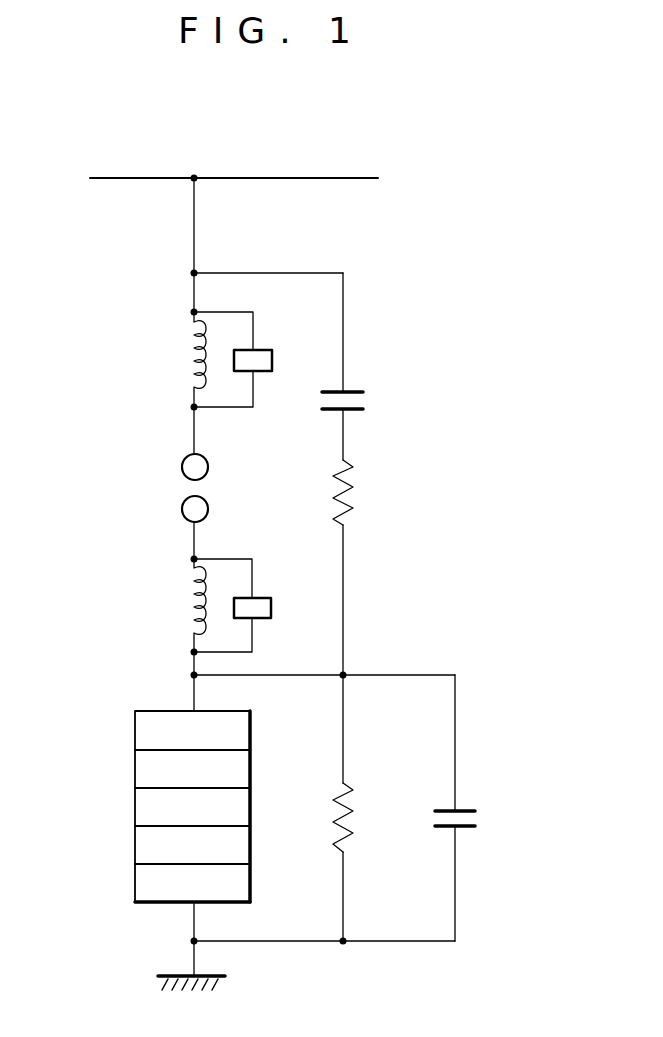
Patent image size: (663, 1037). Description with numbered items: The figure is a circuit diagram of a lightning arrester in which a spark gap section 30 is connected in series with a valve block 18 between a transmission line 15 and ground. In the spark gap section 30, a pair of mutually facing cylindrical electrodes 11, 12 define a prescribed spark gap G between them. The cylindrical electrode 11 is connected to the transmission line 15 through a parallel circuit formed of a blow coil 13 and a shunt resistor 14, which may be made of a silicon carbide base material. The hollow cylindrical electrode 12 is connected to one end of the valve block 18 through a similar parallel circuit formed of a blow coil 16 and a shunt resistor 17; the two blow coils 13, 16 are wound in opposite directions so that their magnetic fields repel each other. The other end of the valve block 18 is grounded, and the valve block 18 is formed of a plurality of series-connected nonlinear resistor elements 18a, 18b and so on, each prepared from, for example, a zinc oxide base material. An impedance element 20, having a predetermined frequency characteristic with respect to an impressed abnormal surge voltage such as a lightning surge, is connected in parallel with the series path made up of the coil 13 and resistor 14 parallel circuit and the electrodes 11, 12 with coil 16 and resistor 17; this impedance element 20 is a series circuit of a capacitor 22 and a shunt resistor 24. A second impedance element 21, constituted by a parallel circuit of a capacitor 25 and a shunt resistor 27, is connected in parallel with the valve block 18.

The transmission line 15 is at (357, 178).
The spark gap section 30 is at (118, 476).
The blow coil 13 is at (180, 357).
The shunt resistor 14 is at (271, 353).
The cylindrical electrode 11 is at (185, 466).
The spark gap G is at (197, 487).
The cylindrical electrode 12 is at (185, 511).
The blow coil 16 is at (187, 610).
The shunt resistor 17 is at (270, 600).
The valve block 18 is at (120, 785).
The nonlinear resistor element 18a is at (240, 740).
The nonlinear resistor element 18b is at (243, 777).
The impedance element 20 is at (413, 472).
The capacitor 22 is at (368, 400).
The shunt resistor 24 is at (350, 498).
The impedance element 21 is at (475, 860).
The shunt resistor 27 is at (356, 805).
The capacitor 25 is at (478, 815).